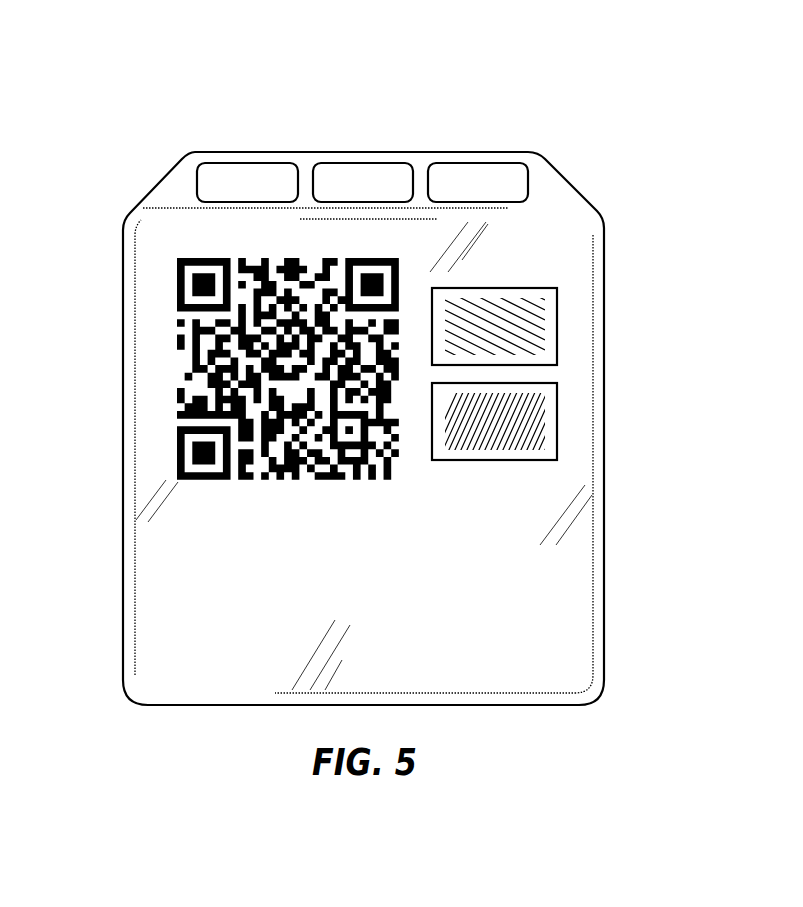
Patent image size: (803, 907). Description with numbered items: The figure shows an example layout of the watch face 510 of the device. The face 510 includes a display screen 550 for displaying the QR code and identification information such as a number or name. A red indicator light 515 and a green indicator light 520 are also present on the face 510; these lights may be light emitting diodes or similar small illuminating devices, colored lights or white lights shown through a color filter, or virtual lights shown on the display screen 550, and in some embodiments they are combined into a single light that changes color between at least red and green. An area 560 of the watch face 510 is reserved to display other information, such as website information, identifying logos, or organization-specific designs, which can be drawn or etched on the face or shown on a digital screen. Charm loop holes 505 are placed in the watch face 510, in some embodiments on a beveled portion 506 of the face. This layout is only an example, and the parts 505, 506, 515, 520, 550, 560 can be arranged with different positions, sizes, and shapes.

The watch face 510 is at (100, 50).
The charm loop holes 505 is at (249, 176).
The beveled portion 506 is at (556, 200).
The red indicator light 515 is at (564, 328).
The green indicator light 520 is at (564, 424).
The display screen 550 is at (174, 367).
The area 560 is at (575, 613).